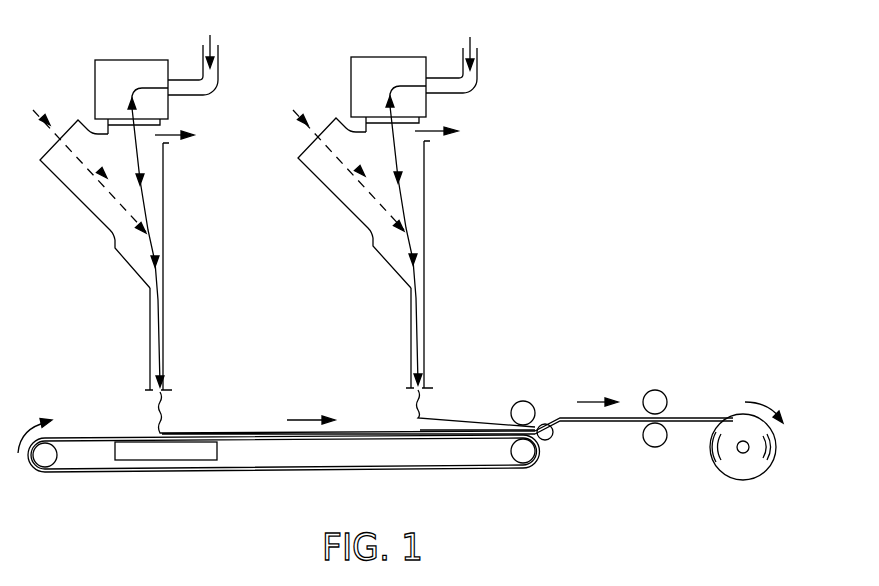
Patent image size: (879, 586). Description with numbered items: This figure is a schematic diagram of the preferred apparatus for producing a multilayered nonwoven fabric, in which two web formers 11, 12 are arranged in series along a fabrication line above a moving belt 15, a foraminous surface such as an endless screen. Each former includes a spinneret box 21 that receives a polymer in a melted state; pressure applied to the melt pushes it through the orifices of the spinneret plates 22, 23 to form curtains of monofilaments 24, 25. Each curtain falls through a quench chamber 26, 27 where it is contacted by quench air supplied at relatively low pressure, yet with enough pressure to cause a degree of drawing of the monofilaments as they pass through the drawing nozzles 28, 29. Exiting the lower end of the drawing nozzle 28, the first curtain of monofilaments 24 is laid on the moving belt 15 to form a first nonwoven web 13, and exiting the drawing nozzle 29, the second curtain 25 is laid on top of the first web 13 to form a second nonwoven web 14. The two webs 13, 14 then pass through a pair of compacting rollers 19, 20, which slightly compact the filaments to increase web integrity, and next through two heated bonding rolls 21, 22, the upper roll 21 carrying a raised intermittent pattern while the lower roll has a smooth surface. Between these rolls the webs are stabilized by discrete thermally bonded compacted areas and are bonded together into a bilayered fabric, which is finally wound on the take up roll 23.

The first web former 11 is at (170, 183).
The second web former 12 is at (440, 177).
The first nonwoven web 13 is at (227, 432).
The second nonwoven web 14 is at (457, 425).
The moving belt 15 is at (267, 473).
The compacting roller 19 is at (525, 404).
The compacting roller 20 is at (552, 438).
The spinneret box / upper heated bonding roll 21 is at (123, 88).
The spinneret plate / lower heated bonding roll 22 is at (162, 124).
The spinneret plate / take up roll 23 is at (421, 122).
The first curtain of monofilaments 24 is at (147, 200).
The second curtain of monofilaments 25 is at (405, 200).
The quench chamber 26 is at (122, 160).
The quench chamber 27 is at (378, 160).
The drawing nozzle 28 is at (167, 320).
The drawing nozzle 29 is at (427, 321).